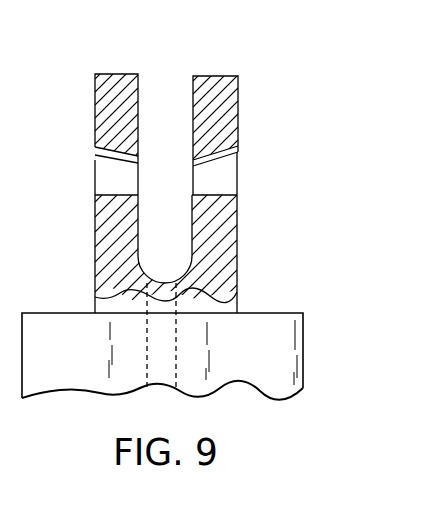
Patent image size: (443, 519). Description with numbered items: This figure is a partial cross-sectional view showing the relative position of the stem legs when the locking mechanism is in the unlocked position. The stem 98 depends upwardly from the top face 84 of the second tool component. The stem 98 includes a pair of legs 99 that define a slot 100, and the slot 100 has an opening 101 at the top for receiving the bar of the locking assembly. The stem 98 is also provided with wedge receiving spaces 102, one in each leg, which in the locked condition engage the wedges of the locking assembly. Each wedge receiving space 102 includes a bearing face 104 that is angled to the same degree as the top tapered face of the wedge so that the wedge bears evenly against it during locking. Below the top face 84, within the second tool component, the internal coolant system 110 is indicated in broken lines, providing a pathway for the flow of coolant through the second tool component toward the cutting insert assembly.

The top face 84 is at (260, 313).
The stem 98 is at (240, 247).
The legs 99 is at (233, 87).
The slot 100 is at (151, 116).
The opening 101 is at (172, 82).
The wedge receiving space 102 is at (238, 172).
The bearing face 104 is at (232, 140).
The internal coolant system 110 is at (147, 350).